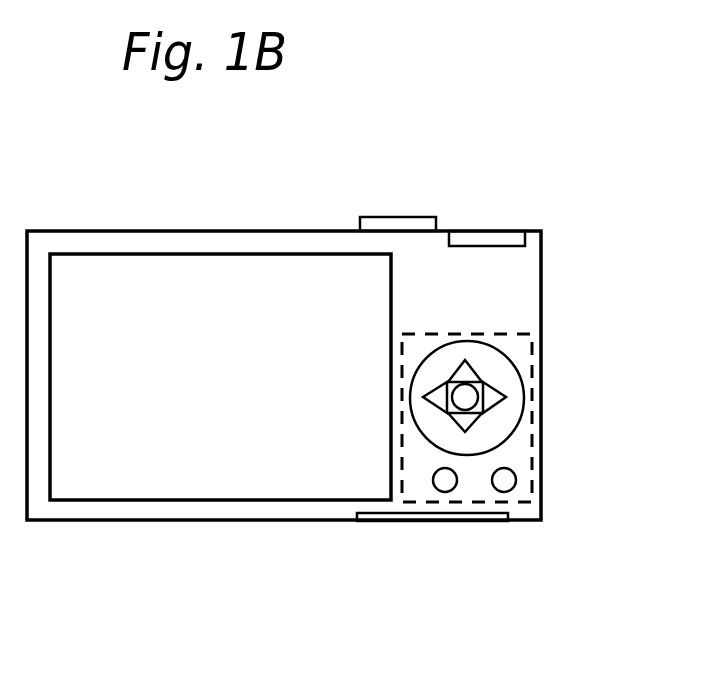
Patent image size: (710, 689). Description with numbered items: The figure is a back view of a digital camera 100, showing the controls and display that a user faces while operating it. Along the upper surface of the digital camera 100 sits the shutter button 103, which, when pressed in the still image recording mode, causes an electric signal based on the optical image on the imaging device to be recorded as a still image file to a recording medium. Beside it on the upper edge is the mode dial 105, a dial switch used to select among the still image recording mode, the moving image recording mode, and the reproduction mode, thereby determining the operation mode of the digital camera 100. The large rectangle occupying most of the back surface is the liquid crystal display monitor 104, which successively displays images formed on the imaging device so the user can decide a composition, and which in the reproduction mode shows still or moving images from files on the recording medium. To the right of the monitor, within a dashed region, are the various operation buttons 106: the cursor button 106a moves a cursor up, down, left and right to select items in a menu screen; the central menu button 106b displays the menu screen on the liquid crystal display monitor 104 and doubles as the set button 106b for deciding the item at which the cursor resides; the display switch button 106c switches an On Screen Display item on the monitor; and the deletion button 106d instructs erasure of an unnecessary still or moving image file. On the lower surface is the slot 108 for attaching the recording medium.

The digital camera 100 is at (265, 208).
The shutter button 103 is at (399, 214).
The liquid crystal display monitor 104 is at (118, 250).
The mode dial 105 is at (511, 229).
The operation buttons 106 is at (480, 333).
The cursor button 106a is at (463, 374).
The menu button / set button 106b is at (465, 395).
The display switch button 106c is at (447, 483).
The deletion button 106d is at (504, 482).
The slot 108 is at (375, 522).